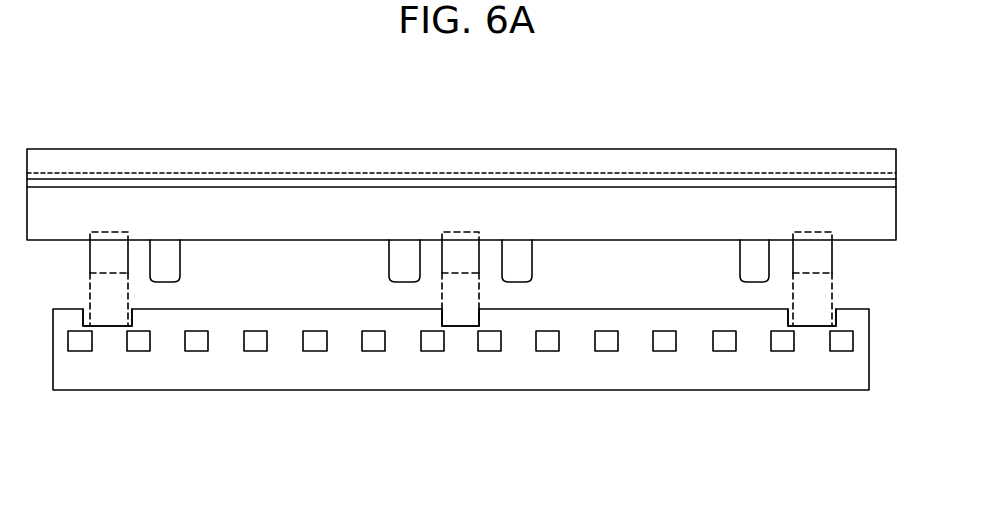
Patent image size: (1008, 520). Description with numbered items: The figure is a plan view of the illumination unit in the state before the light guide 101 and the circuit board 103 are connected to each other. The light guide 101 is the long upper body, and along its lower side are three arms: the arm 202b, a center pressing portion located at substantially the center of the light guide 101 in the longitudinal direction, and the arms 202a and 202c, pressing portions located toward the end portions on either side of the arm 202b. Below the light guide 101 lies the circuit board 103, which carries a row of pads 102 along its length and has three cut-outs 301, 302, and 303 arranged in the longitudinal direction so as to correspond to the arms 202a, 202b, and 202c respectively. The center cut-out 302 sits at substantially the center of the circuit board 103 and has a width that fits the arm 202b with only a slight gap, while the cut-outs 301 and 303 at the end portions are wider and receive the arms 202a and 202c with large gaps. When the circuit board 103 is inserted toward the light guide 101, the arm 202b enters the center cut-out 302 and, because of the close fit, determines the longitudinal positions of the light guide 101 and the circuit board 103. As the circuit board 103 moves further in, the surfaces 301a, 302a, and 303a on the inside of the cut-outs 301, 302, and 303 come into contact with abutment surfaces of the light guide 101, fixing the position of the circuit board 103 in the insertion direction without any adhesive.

The light guide 101 is at (357, 163).
The electrode pads 102 is at (315, 340).
The circuit board 103 is at (338, 363).
The arm 202a is at (108, 256).
The arm 202b is at (458, 258).
The arm 202c is at (813, 258).
The cut-out 301 is at (112, 320).
The surface 301a is at (122, 336).
The cut-out 302 is at (463, 317).
The surface 302a is at (459, 330).
The cut-out 303 is at (812, 316).
The surface 303a is at (817, 328).